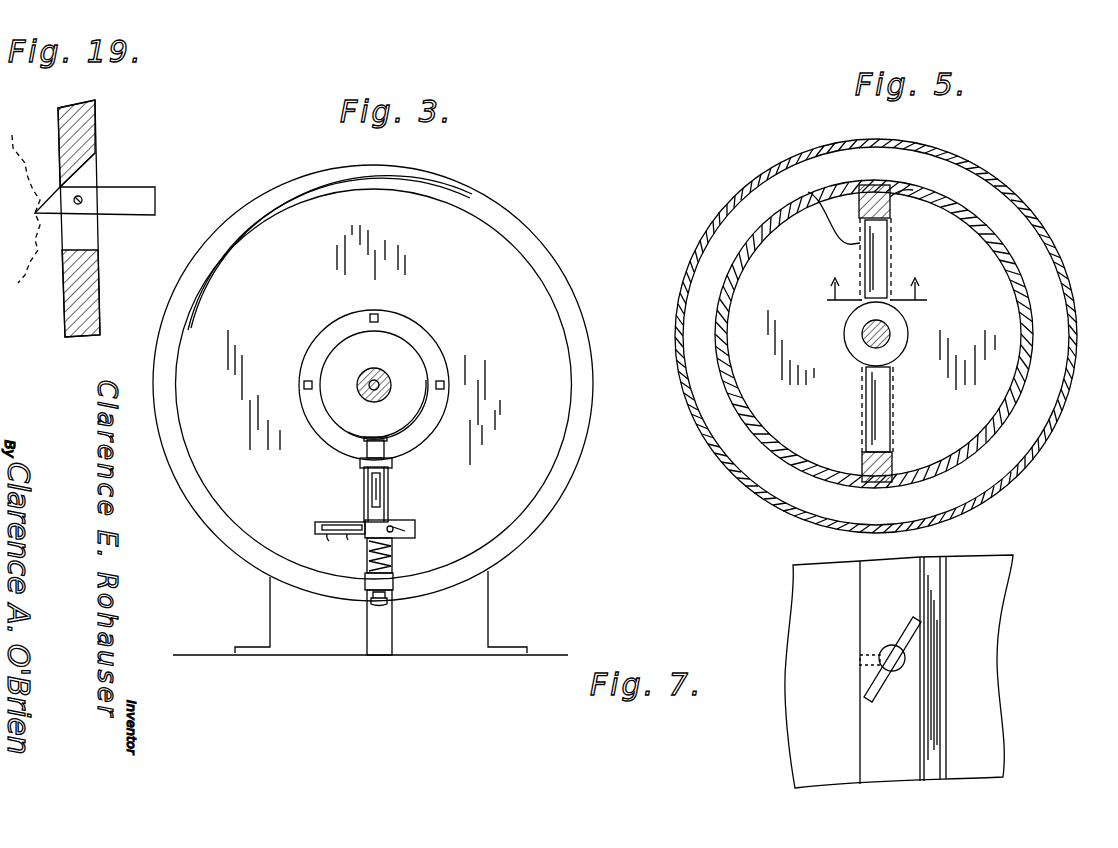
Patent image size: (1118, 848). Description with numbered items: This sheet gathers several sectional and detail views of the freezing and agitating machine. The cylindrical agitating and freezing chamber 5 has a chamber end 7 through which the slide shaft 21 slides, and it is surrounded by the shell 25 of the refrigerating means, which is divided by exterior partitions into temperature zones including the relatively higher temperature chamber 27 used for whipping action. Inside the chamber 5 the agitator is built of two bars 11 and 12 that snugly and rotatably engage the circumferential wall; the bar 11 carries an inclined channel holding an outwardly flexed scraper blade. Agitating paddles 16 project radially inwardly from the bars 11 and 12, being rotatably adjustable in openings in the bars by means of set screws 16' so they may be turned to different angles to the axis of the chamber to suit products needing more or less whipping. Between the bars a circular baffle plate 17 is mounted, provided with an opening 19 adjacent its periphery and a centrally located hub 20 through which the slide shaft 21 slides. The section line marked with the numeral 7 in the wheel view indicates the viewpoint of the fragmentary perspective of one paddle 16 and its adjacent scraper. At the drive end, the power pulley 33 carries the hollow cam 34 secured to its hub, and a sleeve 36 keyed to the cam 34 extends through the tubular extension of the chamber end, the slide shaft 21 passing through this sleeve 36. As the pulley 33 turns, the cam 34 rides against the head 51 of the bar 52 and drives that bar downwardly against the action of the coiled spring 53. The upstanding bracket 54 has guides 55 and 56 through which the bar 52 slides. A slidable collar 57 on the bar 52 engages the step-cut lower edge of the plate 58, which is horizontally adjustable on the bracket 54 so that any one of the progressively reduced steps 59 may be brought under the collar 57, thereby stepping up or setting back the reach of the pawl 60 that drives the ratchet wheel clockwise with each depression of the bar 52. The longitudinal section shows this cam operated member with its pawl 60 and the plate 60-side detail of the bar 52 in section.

In FIG. 5, the cylindrical agitating and freezing chamber 5 is at (958, 206).
In FIG. 7, the cylindrical agitating and freezing chamber 5 is at (810, 567).
In FIG. 5, the chamber end 7 is at (872, 296).
In FIG. 5, the bar 11 is at (893, 205).
In FIG. 5, the bar 12 is at (886, 466).
In FIG. 7, the bar 12 is at (860, 718).
In FIG. 5, the agitating paddle 16 is at (897, 335).
In FIG. 7, the agitating paddle 16 is at (892, 656).
In FIG. 7, the set screw 16' is at (840, 651).
In FIG. 5, the circular baffle plate 17 is at (965, 268).
In FIG. 5, the opening 19 is at (830, 221).
In FIG. 5, the hub 20 is at (904, 332).
In FIG. 3, the slide shaft 21 is at (368, 377).
In FIG. 5, the slide shaft 21 is at (862, 333).
In FIG. 5, the shell 25 is at (1052, 232).
In FIG. 5, the relatively higher temperature chamber 27 is at (1007, 216).
In FIG. 3, the power pulley 33 is at (474, 205).
In FIG. 3, the hollow cam 34 is at (391, 342).
In FIG. 3, the sleeve 36 is at (385, 375).
In FIG. 3, the head 51 is at (384, 445).
In FIG. 19, the bar 52 is at (90, 127).
In FIG. 3, the bar 52 is at (372, 512).
In FIG. 3, the coiled spring 53 is at (392, 549).
In FIG. 3, the upstanding bracket 54 is at (392, 622).
In FIG. 3, the guide 55 is at (393, 580).
In FIG. 3, the guide 56 is at (360, 465).
In FIG. 3, the slidable collar 57 is at (415, 529).
In FIG. 3, the plate 58 is at (315, 525).
In FIG. 3, the step 59 is at (330, 541).
In FIG. 19, the pawl 60 is at (128, 197).
In FIG. 3, the pawl 60 is at (380, 481).